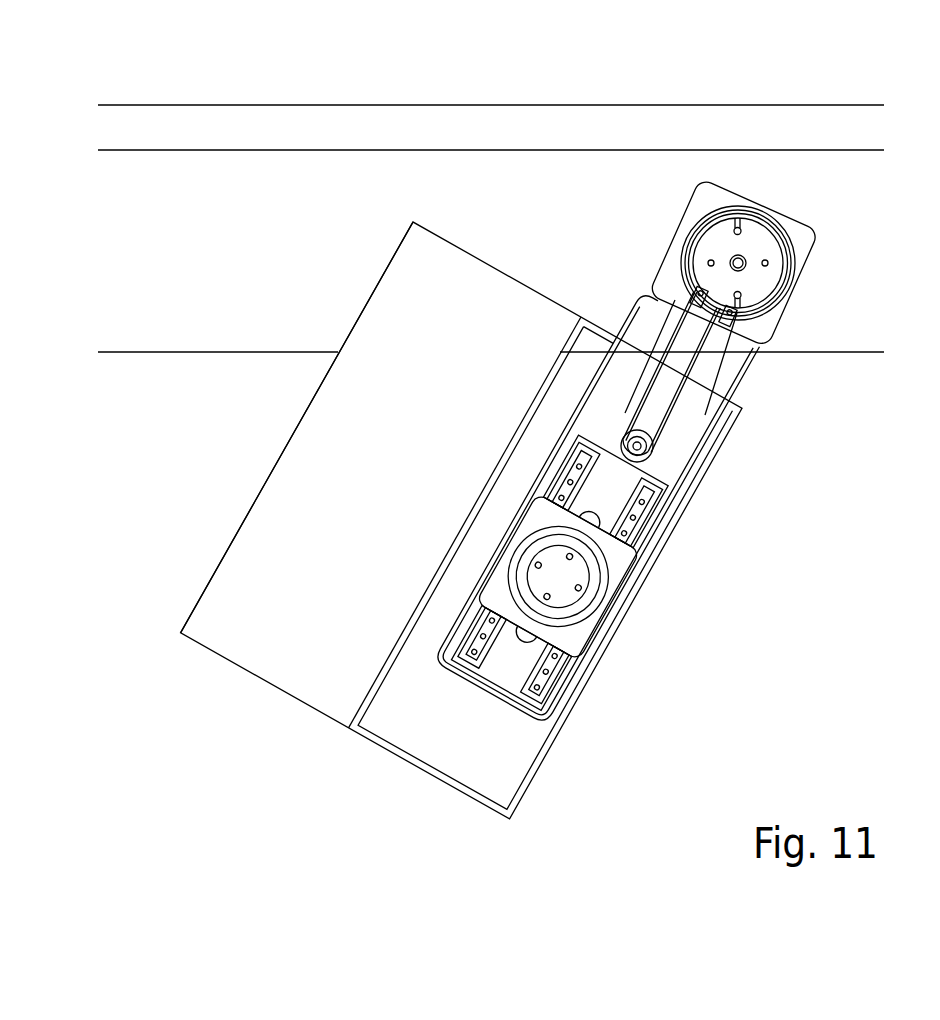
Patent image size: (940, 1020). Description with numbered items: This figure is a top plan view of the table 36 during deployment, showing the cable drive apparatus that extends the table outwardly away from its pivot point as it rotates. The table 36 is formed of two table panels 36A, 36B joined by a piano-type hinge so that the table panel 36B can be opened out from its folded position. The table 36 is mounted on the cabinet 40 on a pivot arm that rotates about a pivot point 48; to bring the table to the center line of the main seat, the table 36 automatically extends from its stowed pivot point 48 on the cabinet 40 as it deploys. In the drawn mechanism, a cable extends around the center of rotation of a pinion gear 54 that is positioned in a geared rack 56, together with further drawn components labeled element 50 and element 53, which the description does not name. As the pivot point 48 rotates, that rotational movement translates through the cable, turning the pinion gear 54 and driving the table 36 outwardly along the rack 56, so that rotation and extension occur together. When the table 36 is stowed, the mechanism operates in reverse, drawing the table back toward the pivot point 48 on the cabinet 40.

The table 36 is at (200, 483).
The table panel 36A is at (467, 758).
The table panel 36B is at (183, 624).
The cabinet 40 is at (330, 175).
The pivot point 48 is at (766, 278).
The carriage 50 is at (563, 567).
The bracket rail 53 is at (700, 340).
The pinion gear 54 is at (650, 430).
The geared rack 56 is at (705, 372).